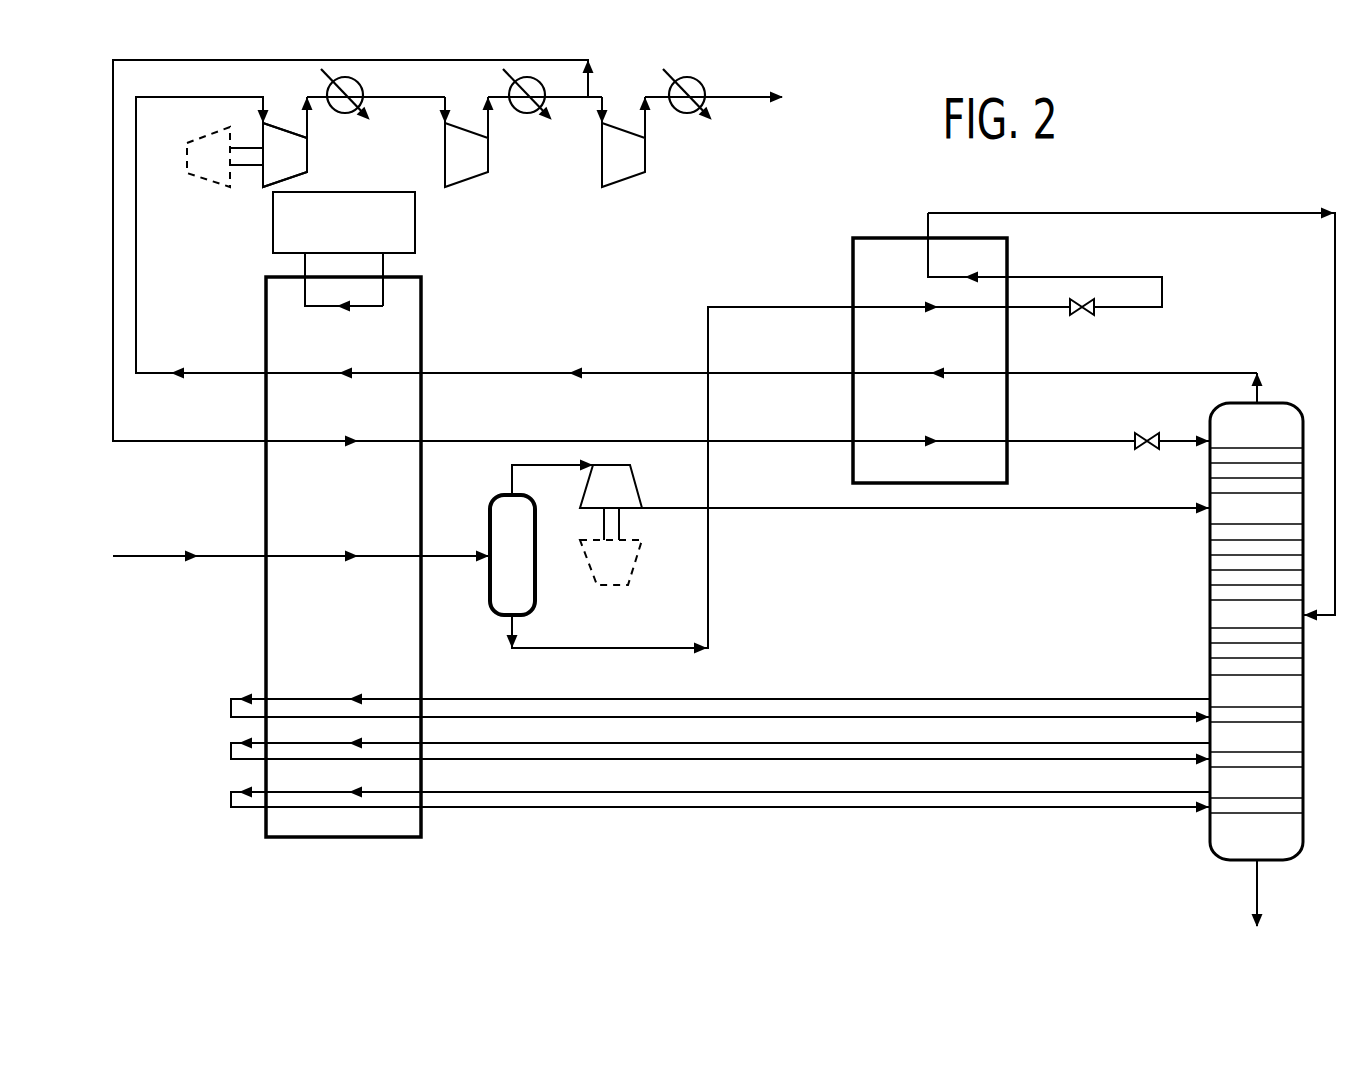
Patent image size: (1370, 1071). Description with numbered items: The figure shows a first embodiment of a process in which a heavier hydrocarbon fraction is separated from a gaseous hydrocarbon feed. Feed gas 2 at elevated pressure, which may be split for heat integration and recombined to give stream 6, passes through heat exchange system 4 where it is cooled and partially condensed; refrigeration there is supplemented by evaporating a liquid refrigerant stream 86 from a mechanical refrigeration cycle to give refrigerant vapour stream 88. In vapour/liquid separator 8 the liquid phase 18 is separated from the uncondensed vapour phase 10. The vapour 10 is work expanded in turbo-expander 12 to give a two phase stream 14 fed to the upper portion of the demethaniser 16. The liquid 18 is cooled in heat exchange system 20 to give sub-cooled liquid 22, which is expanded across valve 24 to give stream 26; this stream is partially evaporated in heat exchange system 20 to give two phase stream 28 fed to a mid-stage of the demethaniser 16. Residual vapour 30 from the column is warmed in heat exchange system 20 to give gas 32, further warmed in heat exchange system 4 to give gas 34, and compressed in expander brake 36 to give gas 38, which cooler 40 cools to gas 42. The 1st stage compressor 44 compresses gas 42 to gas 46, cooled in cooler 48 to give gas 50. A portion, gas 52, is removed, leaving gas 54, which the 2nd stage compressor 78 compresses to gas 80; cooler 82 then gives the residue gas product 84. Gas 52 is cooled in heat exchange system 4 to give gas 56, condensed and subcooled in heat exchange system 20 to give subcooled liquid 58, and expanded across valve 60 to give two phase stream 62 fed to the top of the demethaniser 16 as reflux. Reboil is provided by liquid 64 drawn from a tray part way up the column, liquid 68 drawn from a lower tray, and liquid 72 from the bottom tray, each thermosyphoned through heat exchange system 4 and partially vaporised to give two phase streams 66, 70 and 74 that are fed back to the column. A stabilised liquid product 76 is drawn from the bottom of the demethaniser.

The feed gas 2 is at (157, 557).
The heat exchange system 4 is at (347, 838).
The stream 6 is at (450, 557).
The vapour/liquid separator 8 is at (537, 575).
The vapour phase 10 is at (505, 478).
The turbo-expander 12 is at (590, 483).
The two phase stream 14 is at (672, 507).
The demethaniser 16 is at (1209, 602).
The liquid phase 18 is at (580, 649).
The heat exchange system 20 is at (852, 272).
The sub-cooled liquid 22 is at (1032, 308).
The valve 24 is at (1082, 316).
The stream 26 is at (1123, 276).
The two phase stream 28 is at (1334, 273).
The vapour 30 is at (1262, 390).
The gas 32 is at (513, 372).
The gas 34 is at (190, 372).
The expander brake 36 is at (642, 556).
The gas 38 is at (303, 129).
The cooler 40 is at (345, 114).
The gas 42 is at (410, 98).
The 1st stage compressor 44 is at (470, 188).
The gas 46 is at (492, 130).
The cooler 48 is at (527, 115).
The gas 50 is at (572, 98).
The gas 52 is at (203, 442).
The gas 54 is at (603, 95).
The gas 56 is at (668, 440).
The subcooled liquid 58 is at (1077, 440).
The valve 60 is at (1147, 433).
The two phase stream 62 is at (1188, 440).
The liquid 64 is at (931, 698).
The two phase stream 66 is at (230, 707).
The liquid 68 is at (988, 744).
The two phase stream 70 is at (230, 752).
The liquid 72 is at (931, 791).
The two phase stream 74 is at (230, 801).
The stabilised liquid product 76 is at (1256, 890).
The 2nd stage compressor 78 is at (628, 188).
The gas 80 is at (660, 98).
The cooler 82 is at (701, 80).
The residue gas product 84 is at (753, 98).
The liquid refrigerant stream 86 is at (384, 268).
The refrigerant vapour stream 88 is at (304, 268).